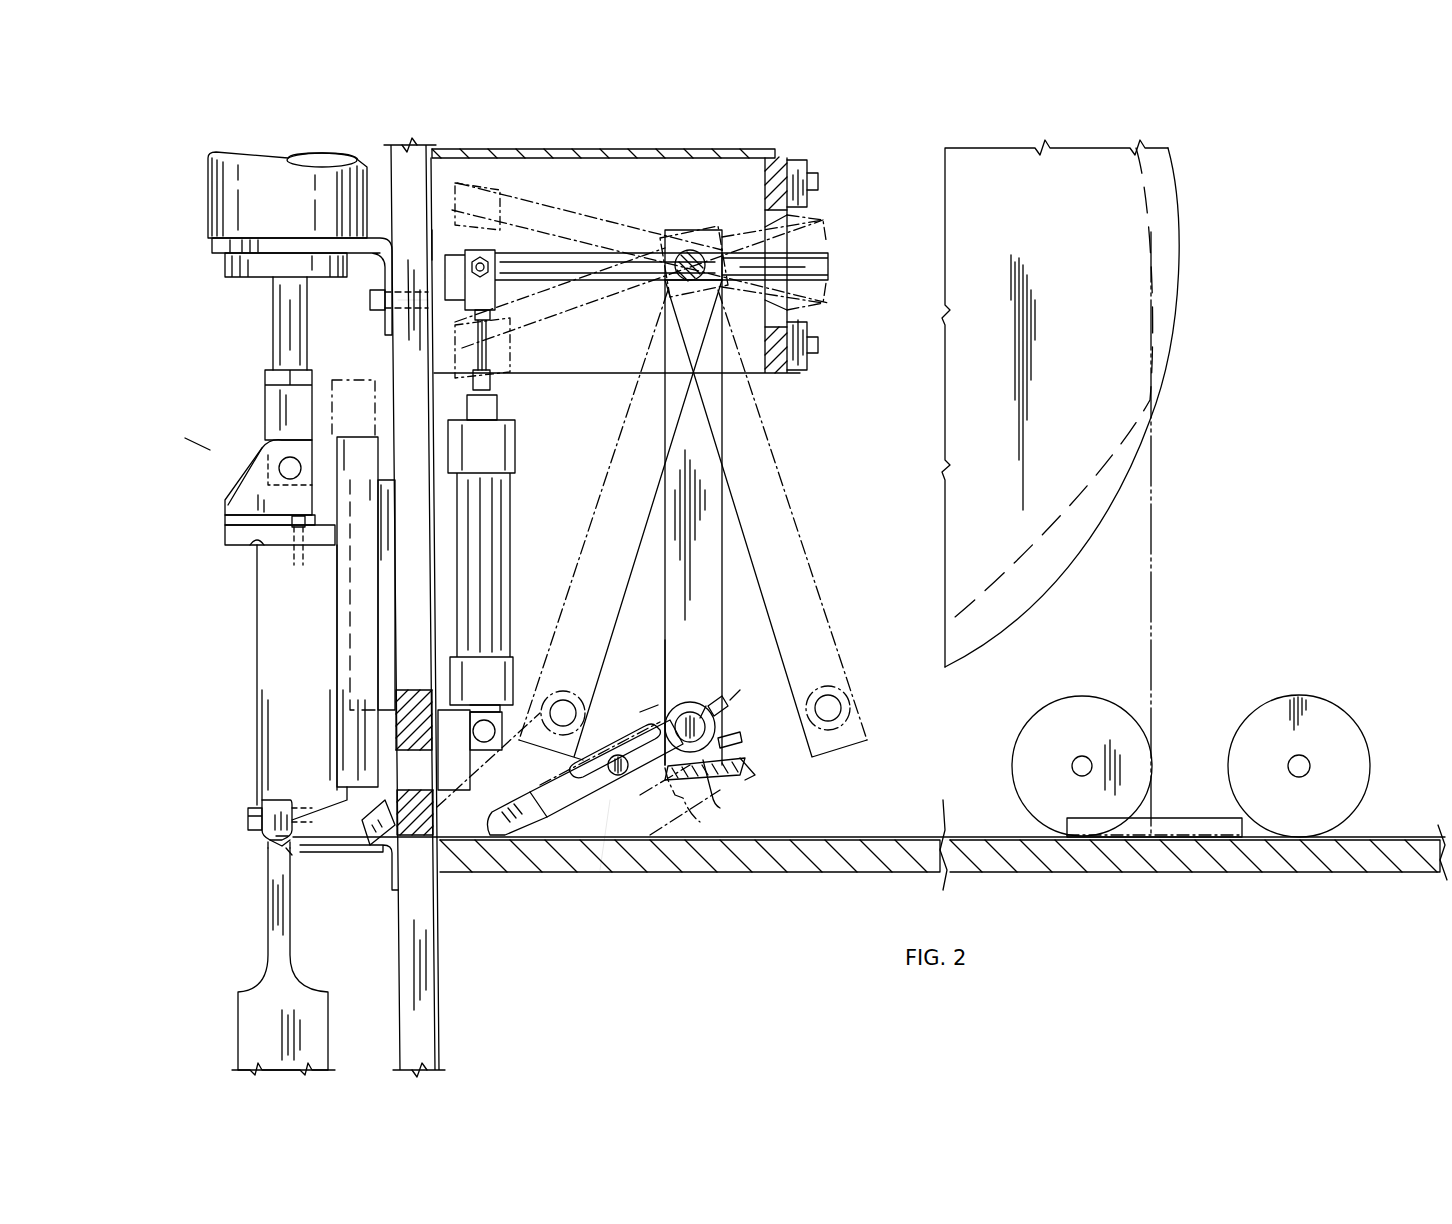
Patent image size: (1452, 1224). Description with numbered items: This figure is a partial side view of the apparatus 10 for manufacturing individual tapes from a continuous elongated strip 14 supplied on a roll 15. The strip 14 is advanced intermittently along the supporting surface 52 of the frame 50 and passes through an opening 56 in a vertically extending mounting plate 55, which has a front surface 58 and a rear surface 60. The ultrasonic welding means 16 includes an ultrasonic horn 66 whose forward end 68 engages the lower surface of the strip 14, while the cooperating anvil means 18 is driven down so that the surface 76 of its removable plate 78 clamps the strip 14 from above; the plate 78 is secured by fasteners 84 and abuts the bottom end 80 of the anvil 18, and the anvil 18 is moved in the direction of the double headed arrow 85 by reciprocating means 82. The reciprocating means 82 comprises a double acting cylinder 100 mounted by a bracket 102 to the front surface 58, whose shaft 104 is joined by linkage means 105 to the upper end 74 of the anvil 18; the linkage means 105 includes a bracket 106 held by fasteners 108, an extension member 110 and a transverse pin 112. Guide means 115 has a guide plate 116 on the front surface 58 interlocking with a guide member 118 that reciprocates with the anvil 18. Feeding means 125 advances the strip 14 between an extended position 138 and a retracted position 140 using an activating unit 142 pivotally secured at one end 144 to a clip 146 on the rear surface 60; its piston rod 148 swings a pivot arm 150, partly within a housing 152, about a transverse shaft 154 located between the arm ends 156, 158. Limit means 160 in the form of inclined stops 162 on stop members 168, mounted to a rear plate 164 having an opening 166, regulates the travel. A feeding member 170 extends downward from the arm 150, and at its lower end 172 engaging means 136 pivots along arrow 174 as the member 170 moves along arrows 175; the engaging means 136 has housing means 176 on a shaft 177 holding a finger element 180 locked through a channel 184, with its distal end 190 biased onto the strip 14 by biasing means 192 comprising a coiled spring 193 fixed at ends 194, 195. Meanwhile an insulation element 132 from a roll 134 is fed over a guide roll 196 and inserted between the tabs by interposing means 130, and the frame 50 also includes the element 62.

The apparatus 10 is at (198, 442).
The continuous elongated strip 14 is at (816, 825).
The roll 15 is at (1160, 378).
The ultrasonic welding means 16 is at (236, 1025).
The anvil means 18 is at (250, 690).
The frame 50 is at (662, 880).
The supporting surface 52 is at (1362, 838).
The mounting plate 55 is at (422, 220).
The opening 56 is at (395, 758).
The front surface 58 is at (394, 163).
The rear surface 60 is at (434, 244).
The guide plate 62 is at (344, 860).
The ultrasonic horn 66 is at (268, 926).
The forward end of horn 68 is at (270, 845).
The upper end of anvil 74 is at (258, 548).
The anvil surface 76 is at (288, 850).
The removable plate 78 is at (270, 838).
The bottom end of anvil 80 is at (281, 800).
The reciprocating means 82 is at (208, 240).
The fasteners 84 is at (252, 810).
The double headed arrow 85 is at (140, 508).
The double acting cylinder 100 is at (212, 216).
The bracket 102 is at (380, 272).
The shaft 104 is at (275, 330).
The linkage means 105 is at (266, 444).
The bracket 106 is at (230, 503).
The fasteners 108 is at (290, 528).
The extension member 110 is at (268, 398).
The pin 112 is at (280, 470).
The guide means 115 is at (385, 462).
The guide plate 116 is at (390, 592).
The guide member 118 is at (358, 390).
The feeding means 125 is at (730, 532).
The interposing means 130 is at (1150, 815).
The insulation element 132 is at (1155, 835).
The roll 134 is at (1266, 705).
The engaging means 136 is at (580, 835).
The extended position 138 is at (560, 592).
The retracted position 140 is at (827, 602).
The activating unit 142 is at (507, 512).
The end of activating unit 144 is at (522, 690).
The clip 146 is at (455, 775).
The piston rod 148 is at (493, 385).
The pivot arm 150 is at (578, 245).
The housing 152 is at (780, 152).
The shaft 154 is at (684, 250).
The end of arm 156 is at (447, 270).
The end of arm 158 is at (833, 265).
The limit means 160 is at (822, 333).
The inclined stops 162 is at (805, 229).
The rear plate 164 is at (778, 378).
The opening 166 is at (795, 214).
The stop members 168 is at (815, 176).
The feeding member 170 is at (715, 627).
The lower end of feeding member 172 is at (720, 782).
The arrow 174 is at (665, 710).
The double headed arrows 175 is at (645, 657).
The housing means 176 is at (608, 790).
The shaft 177 is at (690, 702).
The finger element 180 is at (560, 820).
The channel 184 is at (588, 772).
The distal end of finger element 190 is at (383, 850).
The biasing means 192 is at (745, 778).
The coiled spring 193 is at (716, 800).
The spring end 194 is at (728, 768).
The spring end 195 is at (674, 800).
The guide roll 196 is at (1060, 705).